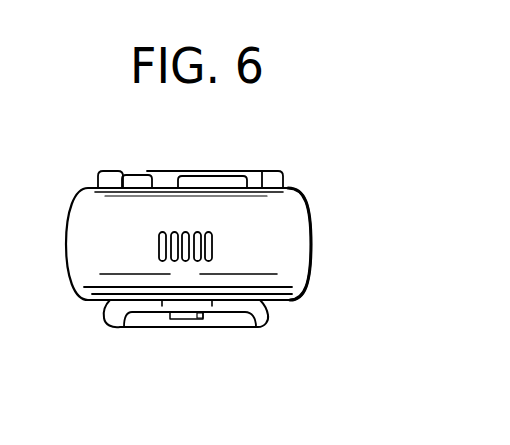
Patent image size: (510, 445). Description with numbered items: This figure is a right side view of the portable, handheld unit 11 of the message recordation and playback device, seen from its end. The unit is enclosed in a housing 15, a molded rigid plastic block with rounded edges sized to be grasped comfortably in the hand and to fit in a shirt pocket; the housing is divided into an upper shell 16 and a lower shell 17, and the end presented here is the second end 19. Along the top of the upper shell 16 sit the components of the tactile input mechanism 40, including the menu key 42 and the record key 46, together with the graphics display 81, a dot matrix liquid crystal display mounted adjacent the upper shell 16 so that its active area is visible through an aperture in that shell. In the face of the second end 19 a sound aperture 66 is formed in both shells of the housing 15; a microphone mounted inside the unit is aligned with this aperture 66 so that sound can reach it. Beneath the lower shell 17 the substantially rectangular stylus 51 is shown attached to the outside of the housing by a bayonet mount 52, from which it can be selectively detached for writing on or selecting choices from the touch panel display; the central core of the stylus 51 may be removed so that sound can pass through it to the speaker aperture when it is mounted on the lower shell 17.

The portable unit 11 is at (204, 256).
The housing 15 is at (308, 266).
The upper shell 16 is at (263, 173).
The lower shell 17 is at (273, 301).
The second end 19 is at (247, 245).
The tactile input mechanism 40 is at (140, 174).
The menu key 42 is at (123, 172).
The record key 46 is at (208, 172).
The stylus 51 is at (112, 322).
The bayonet mount 52 is at (185, 320).
The sound aperture 66 is at (160, 243).
The graphics display 81 is at (166, 170).